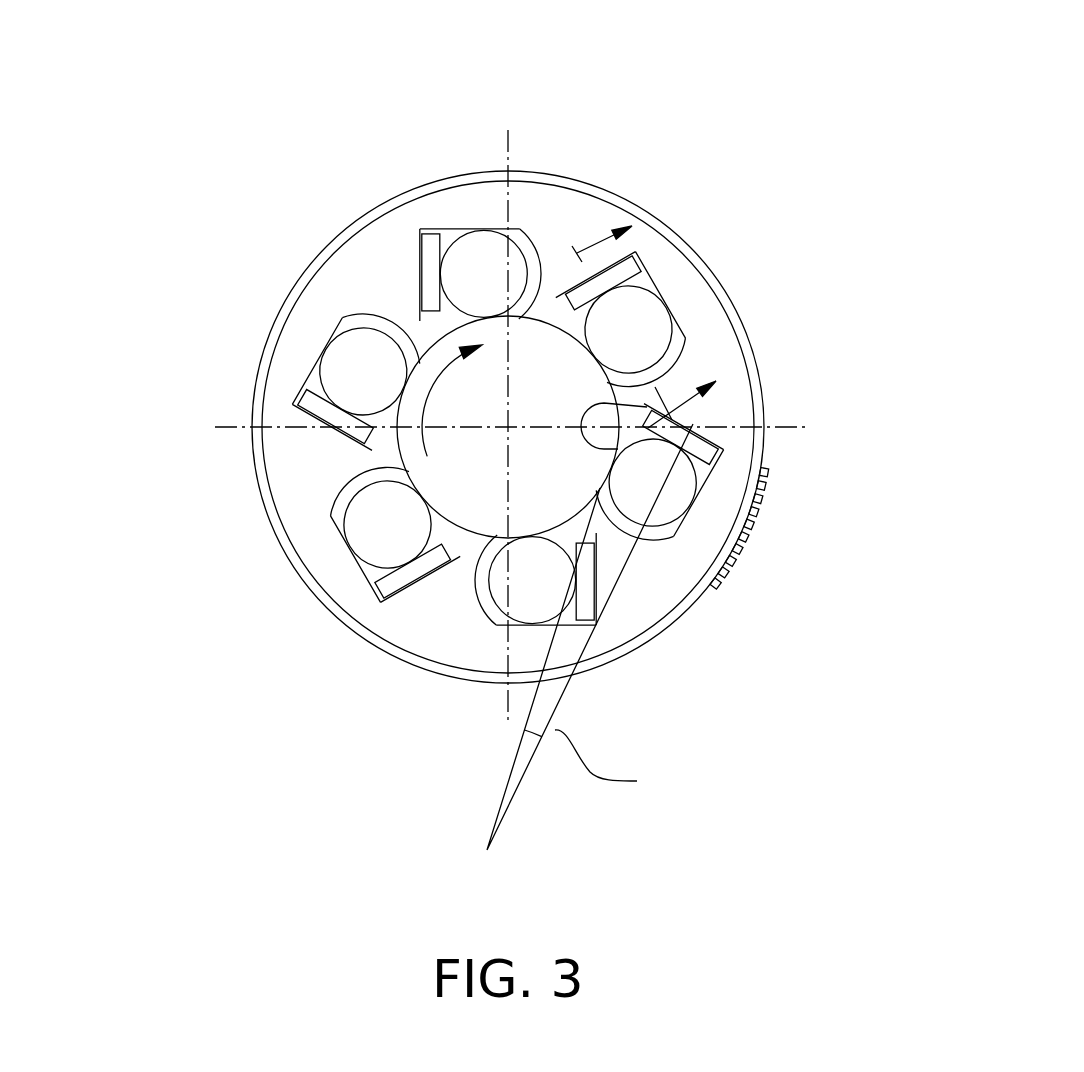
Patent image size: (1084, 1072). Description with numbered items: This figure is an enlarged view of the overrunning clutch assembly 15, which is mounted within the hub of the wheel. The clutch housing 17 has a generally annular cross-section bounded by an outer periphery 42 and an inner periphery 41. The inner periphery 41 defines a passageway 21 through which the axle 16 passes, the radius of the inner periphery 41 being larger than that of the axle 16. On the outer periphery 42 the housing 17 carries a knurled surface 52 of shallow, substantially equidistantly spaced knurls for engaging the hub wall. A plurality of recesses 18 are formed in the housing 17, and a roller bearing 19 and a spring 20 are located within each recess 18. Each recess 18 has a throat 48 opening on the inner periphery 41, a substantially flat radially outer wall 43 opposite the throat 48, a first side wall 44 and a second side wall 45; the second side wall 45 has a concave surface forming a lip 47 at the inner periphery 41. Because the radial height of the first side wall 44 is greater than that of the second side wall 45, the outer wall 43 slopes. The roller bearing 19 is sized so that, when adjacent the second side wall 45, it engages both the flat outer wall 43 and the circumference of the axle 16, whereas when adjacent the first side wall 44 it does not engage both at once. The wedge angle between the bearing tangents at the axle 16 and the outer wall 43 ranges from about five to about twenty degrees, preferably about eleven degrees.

The overrunning clutch assembly 15 is at (740, 197).
The axle 16 is at (478, 520).
The clutch housing 17 is at (318, 545).
The recess 18 is at (526, 245).
The roller bearing 19 is at (340, 368).
The spring 20 is at (433, 250).
The passageway 21 is at (398, 473).
The inner periphery 41 is at (652, 422).
The outer periphery 42 is at (264, 519).
The radially outer wall 43 is at (452, 250).
The first side wall 44 is at (417, 258).
The second side wall 45 is at (543, 263).
The lip 47 is at (405, 472).
The throat 48 is at (432, 348).
The knurled surface 52 is at (750, 527).